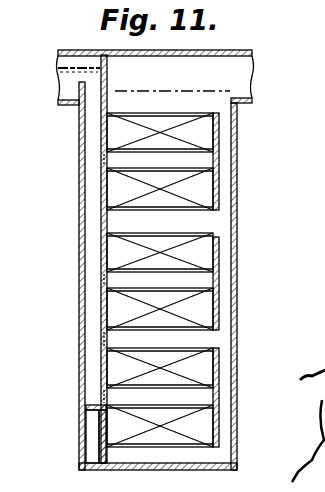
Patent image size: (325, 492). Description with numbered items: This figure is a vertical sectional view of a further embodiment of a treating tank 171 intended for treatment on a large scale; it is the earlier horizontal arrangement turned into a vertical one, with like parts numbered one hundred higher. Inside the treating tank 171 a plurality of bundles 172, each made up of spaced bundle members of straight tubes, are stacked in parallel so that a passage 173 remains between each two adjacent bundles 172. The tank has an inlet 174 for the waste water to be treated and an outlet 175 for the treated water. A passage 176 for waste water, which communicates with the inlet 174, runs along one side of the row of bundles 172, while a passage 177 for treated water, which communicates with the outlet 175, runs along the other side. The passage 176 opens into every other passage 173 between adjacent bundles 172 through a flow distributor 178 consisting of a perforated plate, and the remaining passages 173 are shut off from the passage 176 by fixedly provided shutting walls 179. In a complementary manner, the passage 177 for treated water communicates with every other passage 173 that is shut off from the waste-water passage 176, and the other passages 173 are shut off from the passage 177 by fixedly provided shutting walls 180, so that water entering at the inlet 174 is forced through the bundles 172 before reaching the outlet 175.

The treating tank 171 is at (82, 262).
The bundle 172 is at (120, 186).
The passage 173 is at (197, 217).
The inlet 174 is at (72, 67).
The outlet 175 is at (234, 77).
The passage for waste water 176 is at (98, 226).
The passage for treated water 177 is at (222, 258).
The flow distributor 178 is at (104, 289).
The shutting wall 179 is at (104, 337).
The shutting wall 180 is at (216, 154).